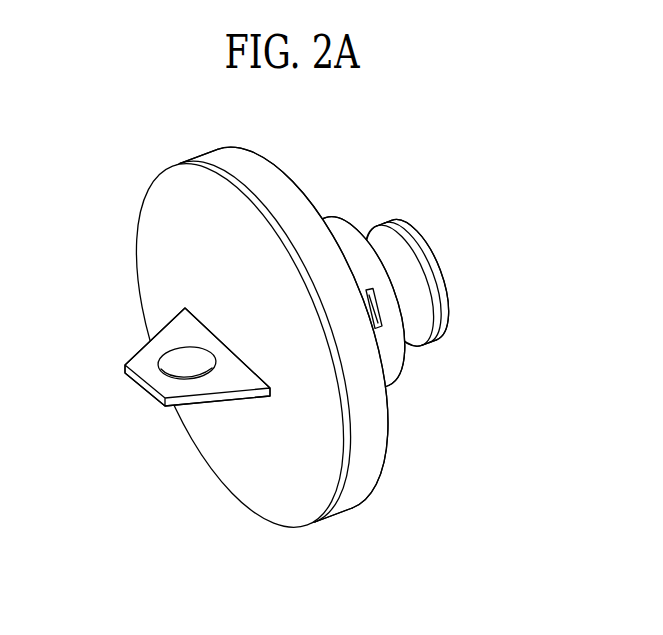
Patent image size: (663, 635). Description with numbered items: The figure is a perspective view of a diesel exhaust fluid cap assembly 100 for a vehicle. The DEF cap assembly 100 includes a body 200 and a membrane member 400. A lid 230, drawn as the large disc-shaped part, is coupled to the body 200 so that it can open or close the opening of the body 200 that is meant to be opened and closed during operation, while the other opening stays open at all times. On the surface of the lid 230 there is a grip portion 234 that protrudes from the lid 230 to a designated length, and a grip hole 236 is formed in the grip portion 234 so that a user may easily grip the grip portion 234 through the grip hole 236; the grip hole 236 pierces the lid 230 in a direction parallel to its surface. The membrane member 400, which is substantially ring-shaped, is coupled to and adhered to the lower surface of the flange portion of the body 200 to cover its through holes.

The DEF cap assembly 100 is at (490, 194).
The body 200 is at (295, 334).
The lid 230 is at (250, 473).
The grip portion 234 is at (174, 371).
The grip hole 236 is at (188, 367).
The membrane member 400 is at (371, 306).